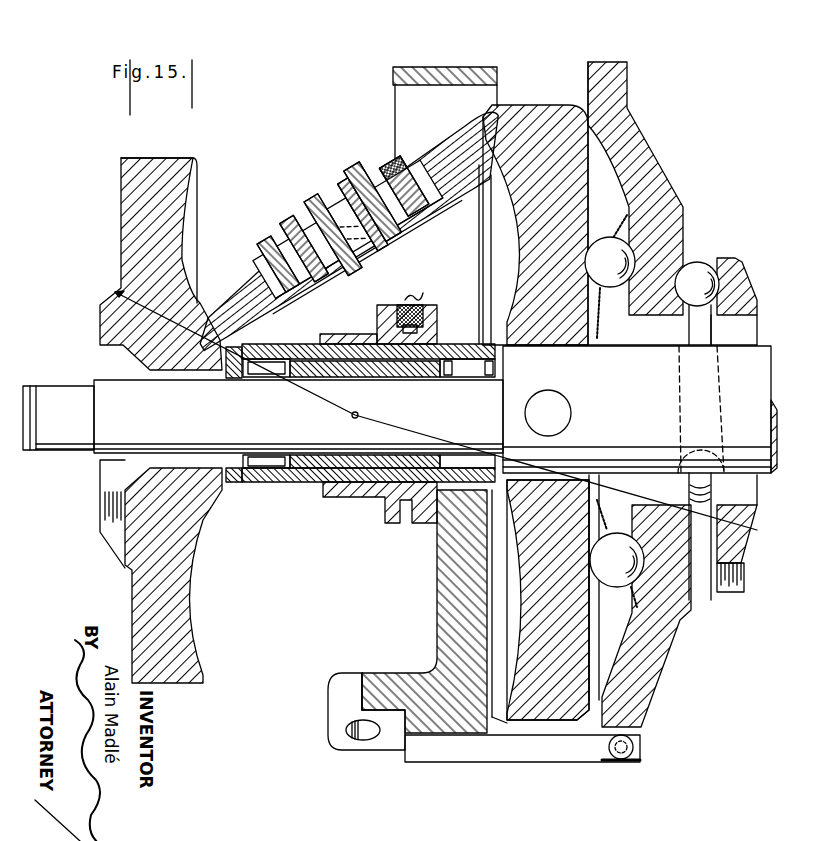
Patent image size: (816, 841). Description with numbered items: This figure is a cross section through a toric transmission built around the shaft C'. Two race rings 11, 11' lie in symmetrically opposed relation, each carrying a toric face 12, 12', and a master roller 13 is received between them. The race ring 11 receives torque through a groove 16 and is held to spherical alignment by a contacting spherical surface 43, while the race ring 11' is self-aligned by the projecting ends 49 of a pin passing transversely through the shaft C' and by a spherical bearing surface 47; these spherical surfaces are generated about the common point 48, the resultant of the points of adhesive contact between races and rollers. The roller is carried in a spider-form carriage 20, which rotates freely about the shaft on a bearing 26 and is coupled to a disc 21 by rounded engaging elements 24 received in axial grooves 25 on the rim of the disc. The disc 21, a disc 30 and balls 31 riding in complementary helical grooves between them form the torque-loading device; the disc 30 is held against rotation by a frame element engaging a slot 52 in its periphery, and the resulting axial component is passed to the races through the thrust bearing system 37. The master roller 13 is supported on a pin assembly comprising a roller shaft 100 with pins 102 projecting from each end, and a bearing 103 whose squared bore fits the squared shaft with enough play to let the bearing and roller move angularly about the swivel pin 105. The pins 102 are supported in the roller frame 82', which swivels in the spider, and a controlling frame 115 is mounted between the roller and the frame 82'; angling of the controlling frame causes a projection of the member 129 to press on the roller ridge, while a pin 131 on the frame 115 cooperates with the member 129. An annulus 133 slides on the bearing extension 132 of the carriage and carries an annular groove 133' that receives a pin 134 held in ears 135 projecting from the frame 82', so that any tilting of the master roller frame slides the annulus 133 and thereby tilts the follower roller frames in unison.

The race ring 11 is at (161, 251).
The race ring 11' is at (535, 207).
The toric face 12 is at (184, 575).
The toric face 12' is at (538, 466).
The roller 13 is at (443, 153).
The groove 16 is at (107, 518).
The carriage 20 is at (457, 67).
The disc 21 is at (627, 85).
The engaging elements 24 is at (580, 796).
The axial grooves 25 is at (621, 760).
The bearing 26 is at (262, 378).
The disc 30 is at (749, 290).
The balls 31 is at (696, 270).
The thrust bearing system 37 is at (620, 250).
The spherical surface 43 is at (113, 291).
The spherical bearing surface 47 is at (757, 530).
The point 48 is at (359, 414).
The projecting ends of pin 49 is at (572, 416).
The slot 52 is at (728, 592).
The roller frame 82' is at (370, 184).
The roller shaft 100 is at (430, 215).
The pins 102 is at (320, 193).
The bearing 103 is at (292, 217).
The swivel pin 105 is at (332, 272).
The controlling frame 115 is at (345, 173).
The member 129 is at (265, 240).
The pin 131 is at (393, 163).
The bearing extension 132 is at (326, 360).
The annulus 133 is at (378, 424).
The annular groove 133' is at (422, 431).
The pin 134 is at (418, 300).
The ears 135 is at (425, 313).
The shaft C' is at (400, 408).